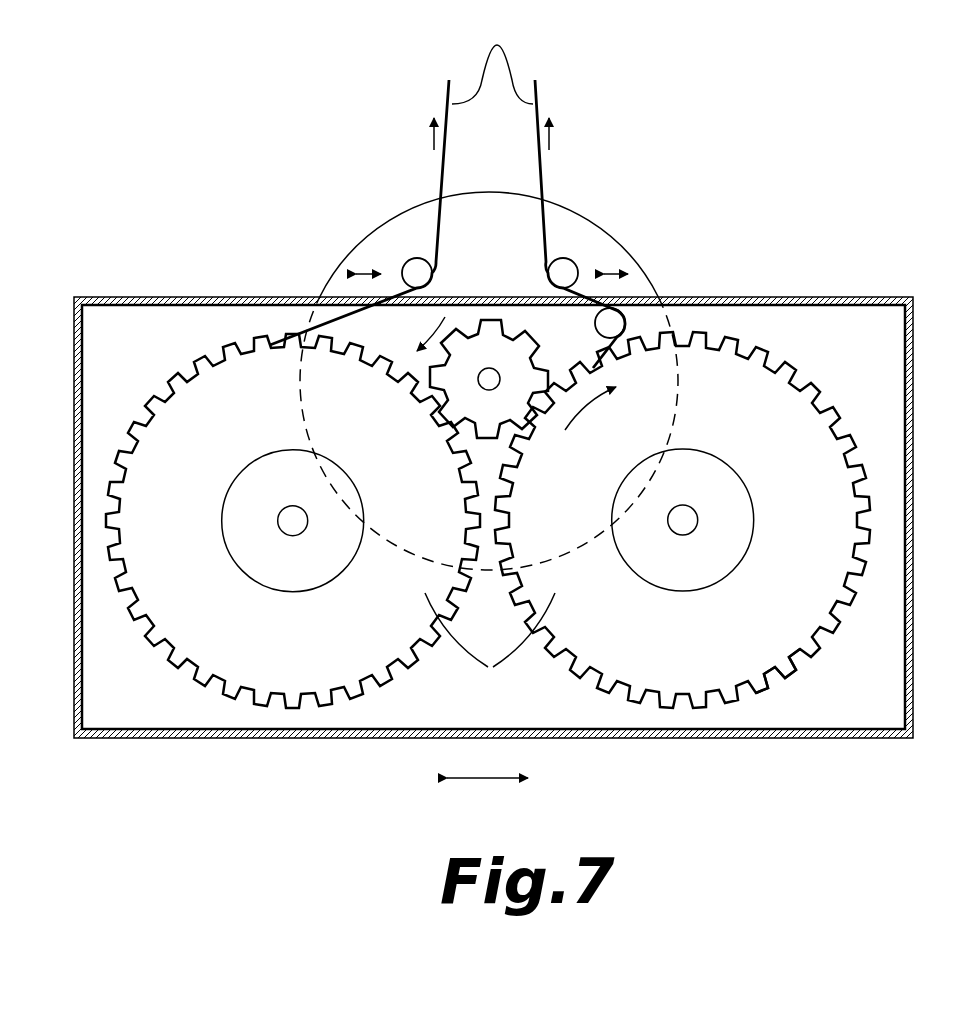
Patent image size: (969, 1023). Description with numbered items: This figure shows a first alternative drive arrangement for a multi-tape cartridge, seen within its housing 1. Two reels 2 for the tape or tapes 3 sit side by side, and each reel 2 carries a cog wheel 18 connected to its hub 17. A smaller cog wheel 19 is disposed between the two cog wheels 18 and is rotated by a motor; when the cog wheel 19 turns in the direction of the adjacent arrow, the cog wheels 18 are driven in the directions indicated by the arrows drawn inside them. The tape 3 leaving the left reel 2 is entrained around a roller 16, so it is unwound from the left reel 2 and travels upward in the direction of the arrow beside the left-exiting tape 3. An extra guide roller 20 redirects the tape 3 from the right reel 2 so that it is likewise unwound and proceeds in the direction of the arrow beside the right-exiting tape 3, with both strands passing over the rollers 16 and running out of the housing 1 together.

The housing 1 is at (103, 683).
The reel 2 is at (490, 649).
The tape 3 is at (497, 45).
The roller 16 is at (417, 267).
The hub 17 is at (735, 528).
The cog wheel 18 is at (767, 640).
The cog wheel 19 is at (483, 362).
The guide roller 20 is at (612, 323).